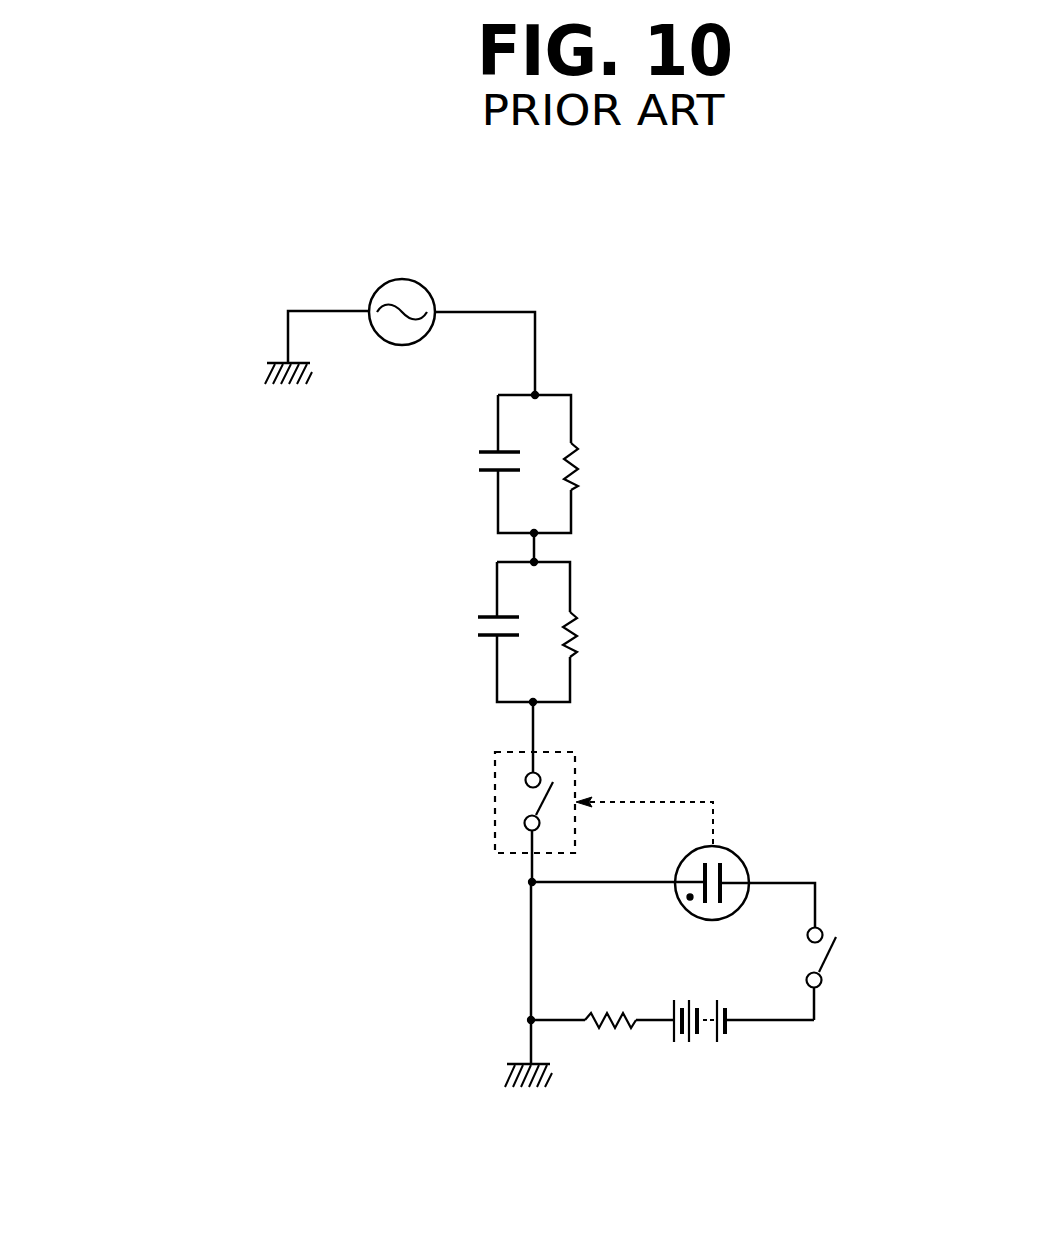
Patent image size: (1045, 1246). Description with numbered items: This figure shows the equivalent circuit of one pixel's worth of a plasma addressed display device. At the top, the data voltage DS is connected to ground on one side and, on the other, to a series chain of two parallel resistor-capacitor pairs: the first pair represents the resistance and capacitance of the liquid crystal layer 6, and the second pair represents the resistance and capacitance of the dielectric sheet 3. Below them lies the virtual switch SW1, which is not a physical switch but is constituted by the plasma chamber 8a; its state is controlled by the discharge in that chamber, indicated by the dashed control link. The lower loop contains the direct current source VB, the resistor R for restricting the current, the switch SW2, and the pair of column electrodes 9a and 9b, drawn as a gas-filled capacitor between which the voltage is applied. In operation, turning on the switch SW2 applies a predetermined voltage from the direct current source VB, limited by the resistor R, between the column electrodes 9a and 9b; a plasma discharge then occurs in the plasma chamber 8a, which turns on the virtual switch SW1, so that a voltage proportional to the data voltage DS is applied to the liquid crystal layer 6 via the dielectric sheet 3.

The liquid crystal layer 6 is at (431, 484).
The dielectric sheet 3 is at (436, 652).
The plasma chamber 8a is at (625, 773).
The column electrode 9a is at (700, 872).
The column electrode 9b is at (726, 872).
The data voltage DS is at (405, 280).
The virtual switch SW1 is at (495, 822).
The switch SW2 is at (855, 974).
The resistor R is at (629, 1039).
The direct current source VB is at (744, 1040).